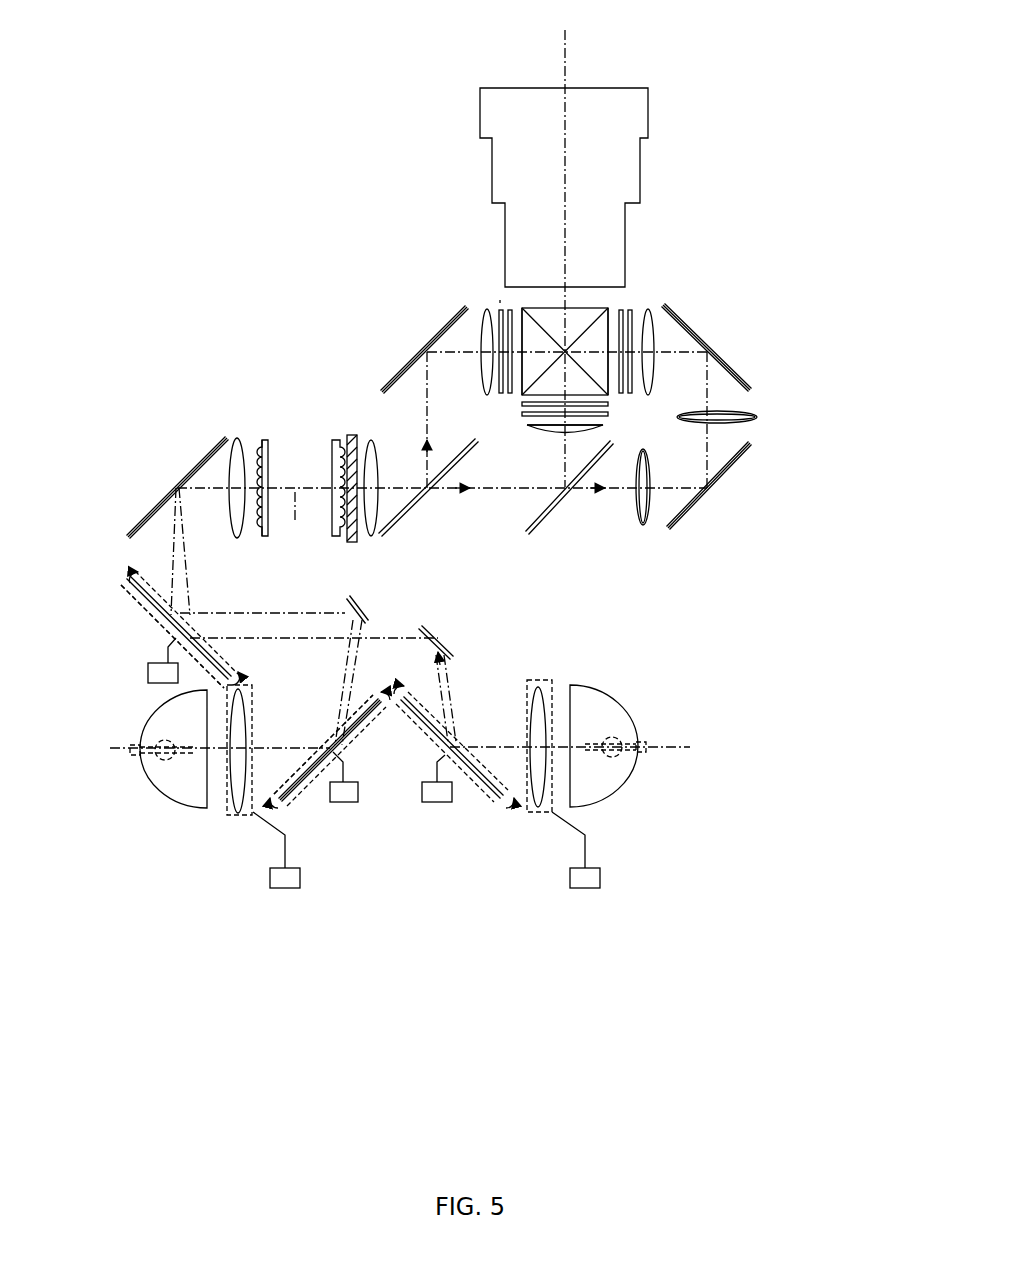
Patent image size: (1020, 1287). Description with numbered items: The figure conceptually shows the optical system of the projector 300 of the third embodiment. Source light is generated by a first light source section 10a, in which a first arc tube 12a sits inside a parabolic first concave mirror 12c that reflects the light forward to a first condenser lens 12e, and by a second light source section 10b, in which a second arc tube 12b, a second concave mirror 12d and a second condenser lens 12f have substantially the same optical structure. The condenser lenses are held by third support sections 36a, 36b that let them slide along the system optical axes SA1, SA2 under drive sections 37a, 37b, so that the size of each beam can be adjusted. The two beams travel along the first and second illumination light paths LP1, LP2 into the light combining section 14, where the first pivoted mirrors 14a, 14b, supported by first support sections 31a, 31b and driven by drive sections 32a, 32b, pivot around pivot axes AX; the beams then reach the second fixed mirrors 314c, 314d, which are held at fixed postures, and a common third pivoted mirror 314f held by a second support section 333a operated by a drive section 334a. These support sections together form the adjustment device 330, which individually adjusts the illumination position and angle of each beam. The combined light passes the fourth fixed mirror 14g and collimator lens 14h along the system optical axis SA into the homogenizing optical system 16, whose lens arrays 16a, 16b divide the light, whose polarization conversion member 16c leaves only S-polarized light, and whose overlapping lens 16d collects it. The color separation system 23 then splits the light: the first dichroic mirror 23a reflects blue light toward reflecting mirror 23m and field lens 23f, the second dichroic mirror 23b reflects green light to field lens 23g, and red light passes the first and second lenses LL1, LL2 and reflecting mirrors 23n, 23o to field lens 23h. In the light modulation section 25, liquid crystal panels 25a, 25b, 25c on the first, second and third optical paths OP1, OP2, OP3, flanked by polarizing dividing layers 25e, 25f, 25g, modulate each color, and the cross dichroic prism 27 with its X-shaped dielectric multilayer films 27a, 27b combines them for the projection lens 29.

The projector 300 is at (763, 47).
The projection lens 29 is at (523, 158).
The cross dichroic prism 27 is at (593, 295).
The dielectric multilayer film 27a is at (610, 305).
The dielectric multilayer film 27b is at (533, 308).
The light modulation section 25 is at (498, 300).
The liquid crystal panel 25a is at (485, 370).
The liquid crystal panel 25b is at (535, 405).
The liquid crystal panel 25c is at (650, 330).
The polarization dividing layers 25e is at (508, 390).
The polarizing dividing layers 25f is at (607, 415).
The polarizing dividing layers 25g is at (628, 390).
The color separation system 23 is at (733, 498).
The first dichroic mirror 23a is at (415, 500).
The second dichroic mirror 23b is at (548, 510).
The field lens 23f is at (440, 333).
The field lens 23g is at (540, 428).
The field lens 23h is at (705, 347).
The reflecting mirror 23m is at (400, 373).
The reflecting mirror 23n is at (735, 468).
The reflecting mirror 23o is at (740, 378).
The first lens LL1 is at (643, 525).
The second lens LL2 is at (750, 418).
The first optical path OP1 is at (427, 420).
The second optical path OP2 is at (560, 470).
The third optical path OP3 is at (710, 397).
The light combining section 14 is at (128, 553).
The fourth fixed mirror 14g is at (165, 503).
The collimator lens 14h is at (237, 438).
The homogenizing optical system 16 is at (300, 383).
The lens array 16a is at (265, 440).
The lens array 16b is at (336, 442).
The polarization conversion member 16c is at (352, 435).
The overlapping lens 16d is at (373, 540).
The system optical axis SA is at (296, 542).
The system optical axis SA1 is at (300, 747).
The system optical axis SA2 is at (510, 740).
The pivot axis AX is at (457, 742).
The first illumination light path LP1 is at (360, 665).
The second illumination light path LP2 is at (452, 680).
The second support section 333a is at (132, 581).
The third pivoted mirror 314f is at (147, 603).
The drive section 334a is at (150, 682).
The second fixed mirror 314c is at (368, 612).
The second fixed mirror 314d is at (442, 643).
The first arc tube 12a is at (178, 803).
The second arc tube 12b is at (623, 753).
The first concave mirror 12c is at (160, 770).
The second concave mirror 12d is at (600, 803).
The first condenser lens 12e is at (243, 814).
The second condenser lens 12f is at (545, 815).
The third support section 36a is at (227, 805).
The third support section 36b is at (552, 680).
The first light source section 10a is at (222, 836).
The second light source section 10b is at (522, 828).
The first pivoted mirror 14a is at (298, 800).
The first pivoted mirror 14b is at (510, 793).
The first support section 31a is at (355, 748).
The first support section 31b is at (410, 715).
The drive section 32a is at (345, 805).
The drive section 32b is at (437, 805).
The drive section 37a is at (290, 890).
The drive section 37b is at (590, 890).
The adjustment device 330 is at (393, 872).